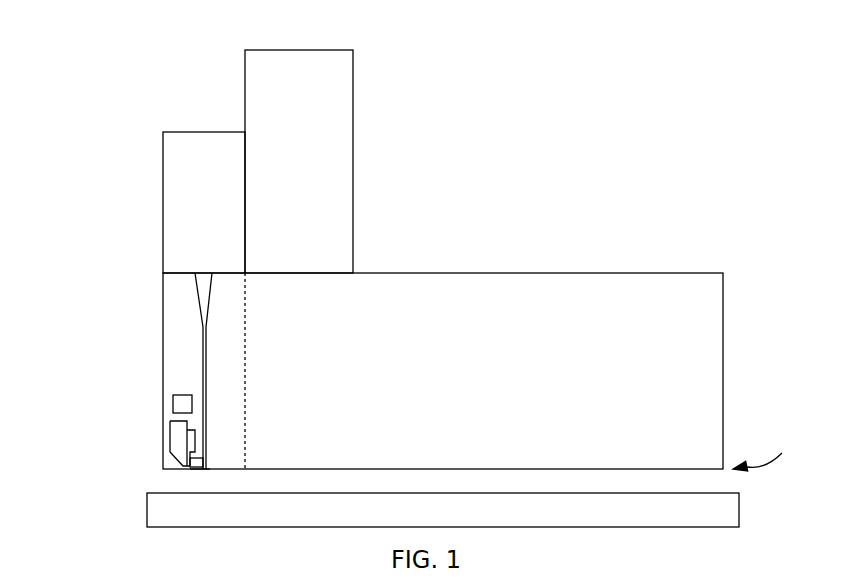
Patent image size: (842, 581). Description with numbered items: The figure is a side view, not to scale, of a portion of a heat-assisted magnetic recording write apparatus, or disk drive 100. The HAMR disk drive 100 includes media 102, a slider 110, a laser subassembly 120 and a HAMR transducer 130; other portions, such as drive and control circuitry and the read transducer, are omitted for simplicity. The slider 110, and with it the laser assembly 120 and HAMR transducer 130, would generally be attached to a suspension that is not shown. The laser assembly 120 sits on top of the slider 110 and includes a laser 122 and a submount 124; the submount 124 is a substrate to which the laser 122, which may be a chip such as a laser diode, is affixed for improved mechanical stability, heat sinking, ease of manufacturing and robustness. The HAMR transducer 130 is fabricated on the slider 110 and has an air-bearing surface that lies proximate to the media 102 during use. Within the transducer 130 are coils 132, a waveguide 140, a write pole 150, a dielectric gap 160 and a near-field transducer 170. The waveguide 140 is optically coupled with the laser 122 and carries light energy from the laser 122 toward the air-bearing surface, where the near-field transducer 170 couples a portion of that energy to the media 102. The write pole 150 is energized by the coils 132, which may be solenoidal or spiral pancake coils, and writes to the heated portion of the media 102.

The HAMR disk drive 100 is at (405, 27).
The media 102 is at (147, 527).
The slider 110 is at (723, 338).
The laser subassembly 120 is at (233, 161).
The laser 122 is at (353, 140).
The submount 124 is at (163, 162).
The HAMR transducer 130 is at (246, 295).
The coil(s) 132 is at (173, 400).
The waveguide 140 is at (203, 353).
The write pole 150 is at (170, 420).
The dielectric gap 160 is at (200, 472).
The near-field transducer (NFT) 170 is at (190, 466).